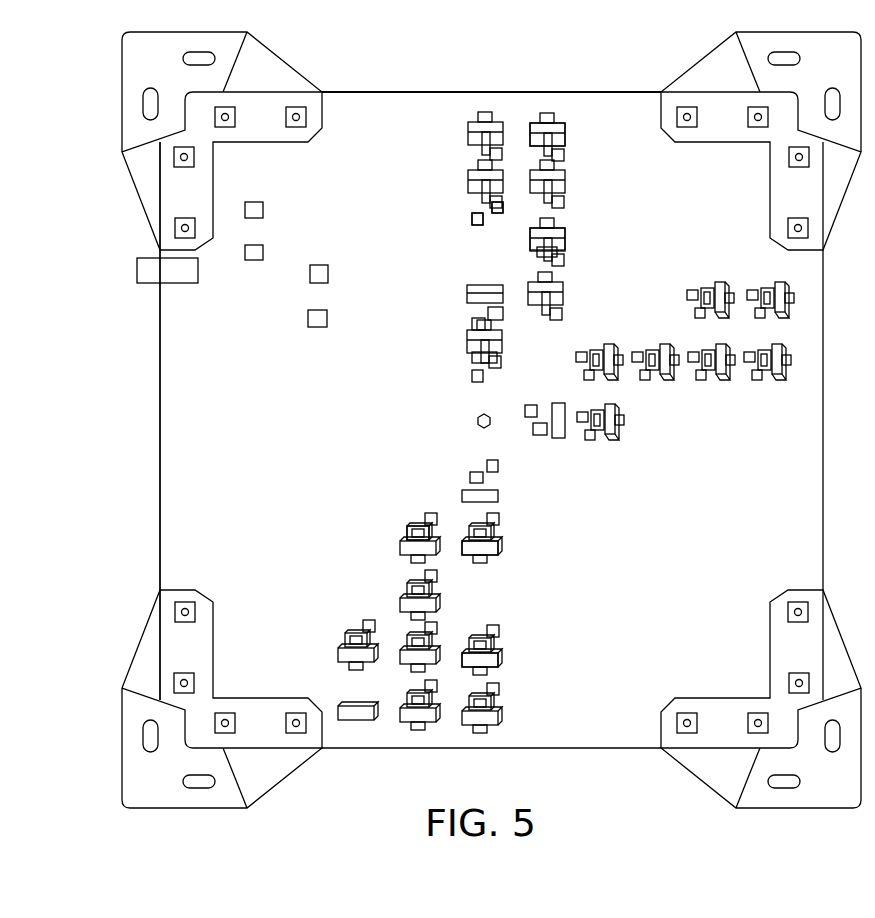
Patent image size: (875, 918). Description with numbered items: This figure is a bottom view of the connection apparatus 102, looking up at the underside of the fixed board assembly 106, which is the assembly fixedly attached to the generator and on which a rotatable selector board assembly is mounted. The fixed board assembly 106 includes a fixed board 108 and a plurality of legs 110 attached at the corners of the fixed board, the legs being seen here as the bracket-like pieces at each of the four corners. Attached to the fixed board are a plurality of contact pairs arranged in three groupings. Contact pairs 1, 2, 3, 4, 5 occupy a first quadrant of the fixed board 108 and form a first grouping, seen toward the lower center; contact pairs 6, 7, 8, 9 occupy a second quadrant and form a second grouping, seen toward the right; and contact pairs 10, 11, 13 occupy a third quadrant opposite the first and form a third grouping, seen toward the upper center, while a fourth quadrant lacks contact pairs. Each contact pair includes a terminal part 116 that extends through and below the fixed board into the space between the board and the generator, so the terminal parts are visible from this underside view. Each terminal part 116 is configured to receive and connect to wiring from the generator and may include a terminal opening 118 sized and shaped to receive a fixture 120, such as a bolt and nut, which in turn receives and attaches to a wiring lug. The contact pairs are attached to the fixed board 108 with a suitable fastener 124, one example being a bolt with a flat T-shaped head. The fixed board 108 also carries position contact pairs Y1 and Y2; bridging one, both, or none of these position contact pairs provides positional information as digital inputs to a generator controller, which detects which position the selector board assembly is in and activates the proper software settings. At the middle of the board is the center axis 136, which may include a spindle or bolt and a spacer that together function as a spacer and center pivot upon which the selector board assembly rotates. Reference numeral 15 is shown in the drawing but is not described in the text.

The connection apparatus 102 is at (535, 68).
The fixed board assembly 106 is at (157, 358).
The fixed board 108 is at (370, 118).
The legs 110 is at (273, 75).
The contact pair 13 is at (458, 163).
The contact pair 10 is at (580, 160).
The contact pair 11 is at (568, 276).
The terminal part 116 is at (562, 126).
The fixture 120 is at (537, 252).
The fastener 124 is at (497, 210).
The sensor unit 15 is at (515, 326).
The center axis 136 is at (478, 421).
The contact pair 9 is at (745, 275).
The contact pair 7 is at (642, 386).
The contact pair 8 is at (743, 386).
The contact pair 6 is at (584, 446).
The contact pair 1 is at (508, 522).
The contact pair 2 is at (448, 663).
The contact pair 3 is at (505, 692).
The contact pair 4 is at (397, 588).
The contact pair 5 is at (338, 673).
The terminal opening 118 is at (484, 540).
The position contact pair Y1 is at (330, 297).
The position contact pair Y2 is at (280, 223).